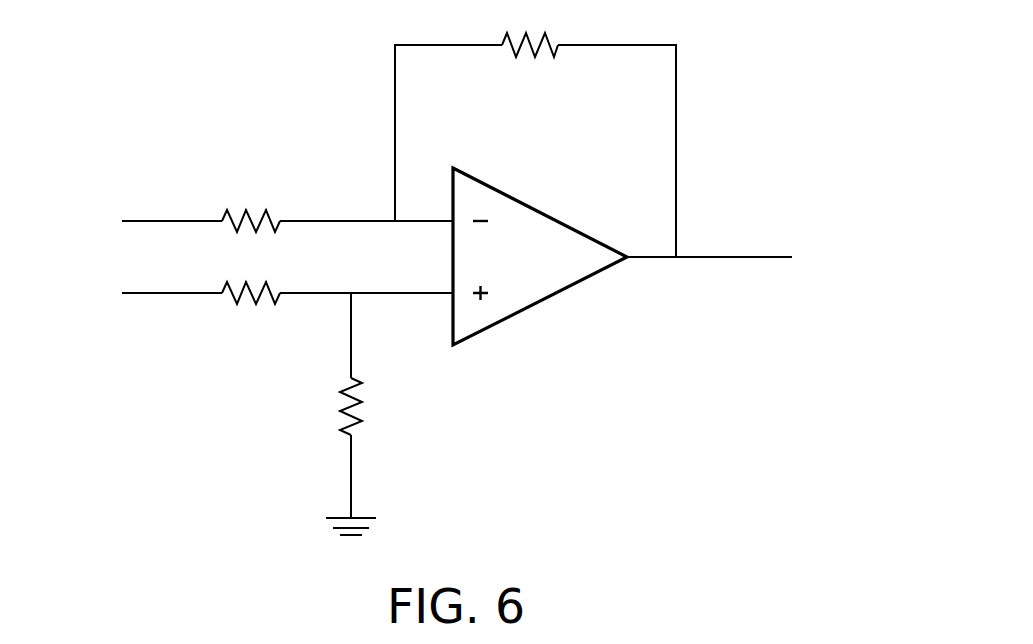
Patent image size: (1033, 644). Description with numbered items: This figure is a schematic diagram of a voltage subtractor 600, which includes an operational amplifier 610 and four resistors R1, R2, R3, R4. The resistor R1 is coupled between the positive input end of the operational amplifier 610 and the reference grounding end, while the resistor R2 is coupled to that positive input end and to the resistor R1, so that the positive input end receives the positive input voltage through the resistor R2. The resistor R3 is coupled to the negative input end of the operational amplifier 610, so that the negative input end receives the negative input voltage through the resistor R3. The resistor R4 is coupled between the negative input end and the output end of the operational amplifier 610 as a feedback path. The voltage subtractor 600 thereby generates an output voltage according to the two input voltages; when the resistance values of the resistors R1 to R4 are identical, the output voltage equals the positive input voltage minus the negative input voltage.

The voltage subtractor 600 is at (453, 285).
The operational amplifier 610 is at (543, 212).
The resistor R1 is at (369, 406).
The resistor R2 is at (251, 314).
The resistor R3 is at (251, 203).
The resistor R4 is at (530, 28).